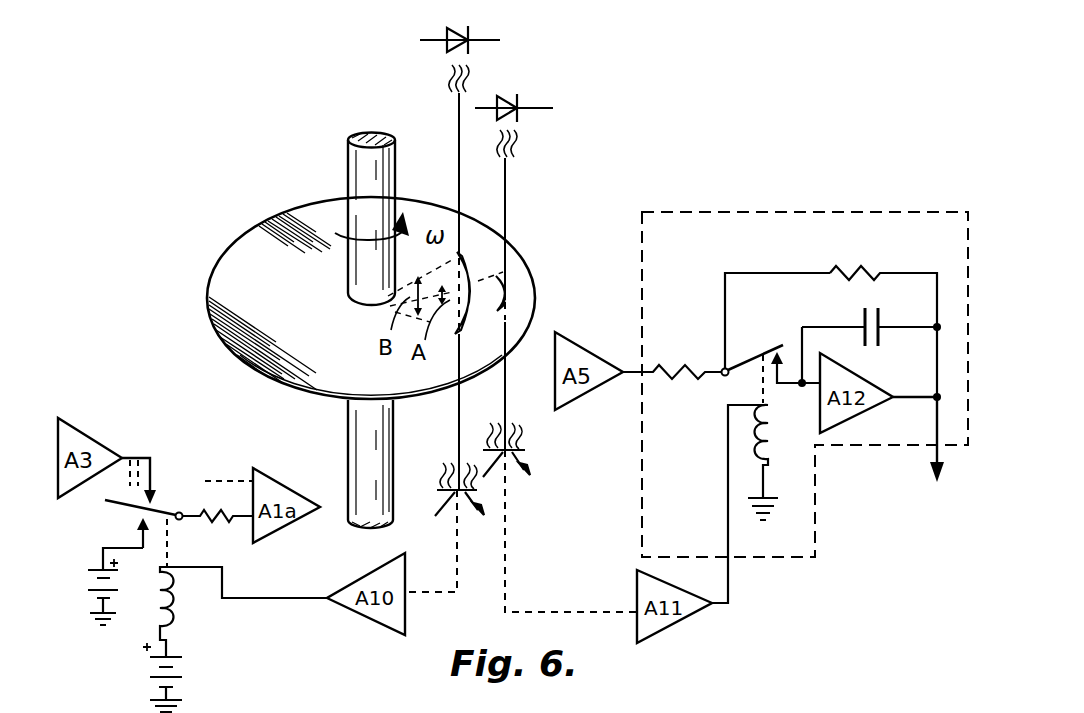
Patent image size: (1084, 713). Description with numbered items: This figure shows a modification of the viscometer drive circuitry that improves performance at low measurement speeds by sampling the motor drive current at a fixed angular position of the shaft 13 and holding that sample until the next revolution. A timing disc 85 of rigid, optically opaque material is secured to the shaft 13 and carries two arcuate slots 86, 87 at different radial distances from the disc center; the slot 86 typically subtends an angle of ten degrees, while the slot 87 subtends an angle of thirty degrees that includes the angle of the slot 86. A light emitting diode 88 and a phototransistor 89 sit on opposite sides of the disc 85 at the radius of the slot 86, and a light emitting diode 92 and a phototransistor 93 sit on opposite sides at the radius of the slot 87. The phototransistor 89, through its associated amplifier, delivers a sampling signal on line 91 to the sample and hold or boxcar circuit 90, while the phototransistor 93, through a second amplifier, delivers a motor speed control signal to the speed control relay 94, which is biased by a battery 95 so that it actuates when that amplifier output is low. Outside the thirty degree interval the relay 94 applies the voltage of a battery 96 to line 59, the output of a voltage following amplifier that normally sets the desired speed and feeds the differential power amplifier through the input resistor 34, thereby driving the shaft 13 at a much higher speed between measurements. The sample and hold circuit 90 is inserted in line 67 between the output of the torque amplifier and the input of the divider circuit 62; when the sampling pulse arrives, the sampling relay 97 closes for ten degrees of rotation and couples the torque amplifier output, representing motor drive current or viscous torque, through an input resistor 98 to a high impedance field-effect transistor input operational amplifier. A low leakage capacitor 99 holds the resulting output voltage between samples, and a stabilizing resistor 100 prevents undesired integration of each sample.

The shaft 13 is at (388, 167).
The input resistor 34 is at (214, 520).
The line 59 is at (130, 456).
The divider circuit 62 is at (917, 541).
The line 67 is at (935, 433).
The timing disc 85 is at (520, 257).
The arcuate slot 86 is at (487, 318).
The arcuate slot 87 is at (462, 250).
The light emitting diode 88 is at (522, 101).
The phototransistor 89 is at (527, 452).
The sample and hold circuit 90 is at (753, 211).
The line 91 is at (714, 610).
The light emitting diode 92 is at (476, 32).
The phototransistor 93 is at (438, 487).
The speed control relay 94 is at (176, 611).
The battery 95 is at (183, 676).
The battery 96 is at (88, 579).
The sampling relay 97 is at (771, 453).
The input resistor 98 is at (672, 365).
The capacitor 99 is at (863, 307).
The stabilizing resistor 100 is at (848, 272).